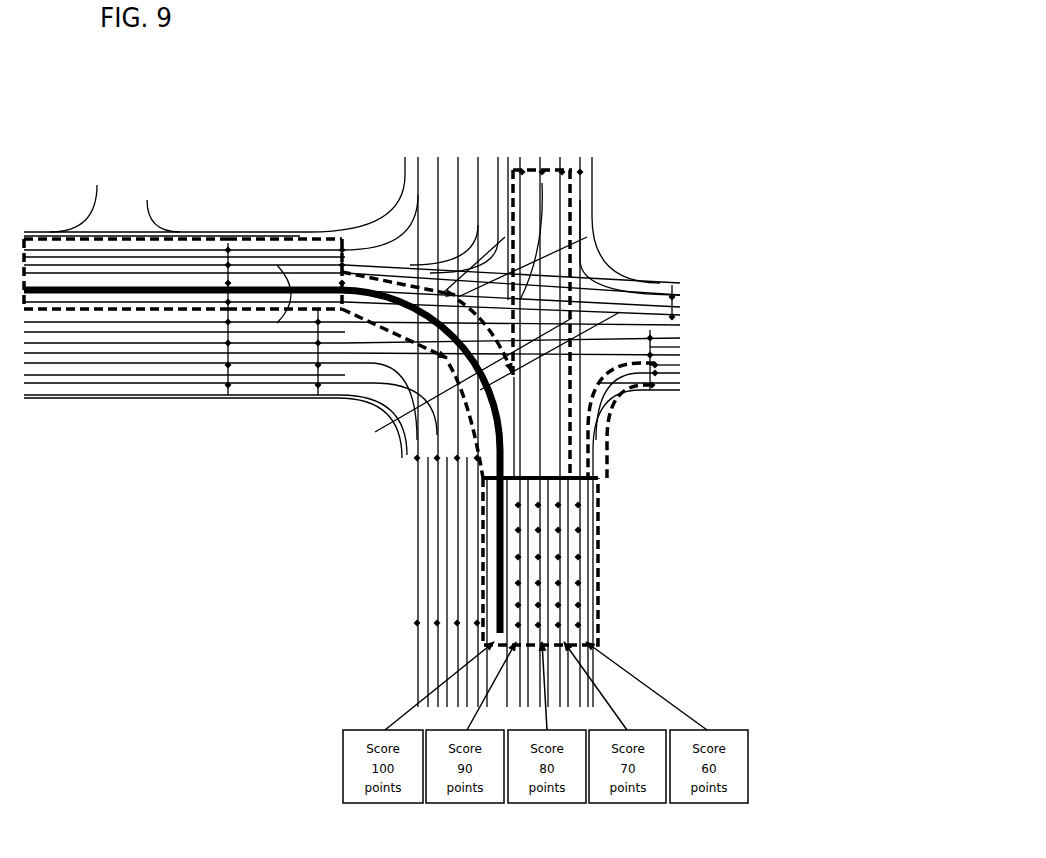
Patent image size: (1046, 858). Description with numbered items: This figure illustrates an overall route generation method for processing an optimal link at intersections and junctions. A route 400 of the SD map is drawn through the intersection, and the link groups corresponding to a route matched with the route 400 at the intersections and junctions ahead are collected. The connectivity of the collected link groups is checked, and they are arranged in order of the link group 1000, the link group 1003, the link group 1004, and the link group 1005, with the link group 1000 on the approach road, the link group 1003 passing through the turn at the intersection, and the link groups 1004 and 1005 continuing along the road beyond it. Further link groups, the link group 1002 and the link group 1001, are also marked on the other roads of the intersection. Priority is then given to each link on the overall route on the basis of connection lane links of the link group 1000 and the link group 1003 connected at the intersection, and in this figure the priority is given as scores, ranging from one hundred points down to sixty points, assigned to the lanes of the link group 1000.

The link group 1005 is at (127, 236).
The link group 1004 is at (296, 236).
The link group 1003 is at (447, 361).
The link group 1002 is at (563, 327).
The link group 1001 is at (657, 361).
The link group 1000 is at (601, 559).
The route 400 is at (496, 442).